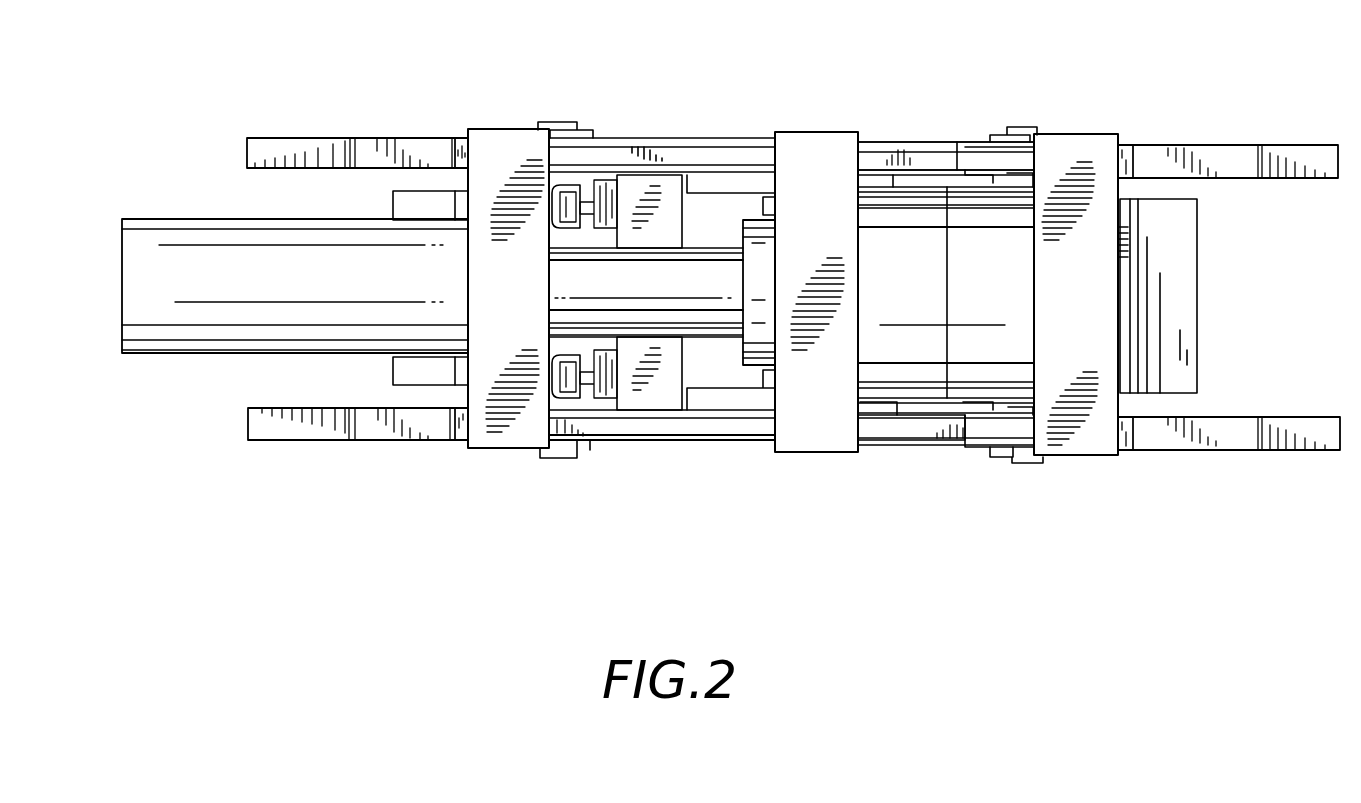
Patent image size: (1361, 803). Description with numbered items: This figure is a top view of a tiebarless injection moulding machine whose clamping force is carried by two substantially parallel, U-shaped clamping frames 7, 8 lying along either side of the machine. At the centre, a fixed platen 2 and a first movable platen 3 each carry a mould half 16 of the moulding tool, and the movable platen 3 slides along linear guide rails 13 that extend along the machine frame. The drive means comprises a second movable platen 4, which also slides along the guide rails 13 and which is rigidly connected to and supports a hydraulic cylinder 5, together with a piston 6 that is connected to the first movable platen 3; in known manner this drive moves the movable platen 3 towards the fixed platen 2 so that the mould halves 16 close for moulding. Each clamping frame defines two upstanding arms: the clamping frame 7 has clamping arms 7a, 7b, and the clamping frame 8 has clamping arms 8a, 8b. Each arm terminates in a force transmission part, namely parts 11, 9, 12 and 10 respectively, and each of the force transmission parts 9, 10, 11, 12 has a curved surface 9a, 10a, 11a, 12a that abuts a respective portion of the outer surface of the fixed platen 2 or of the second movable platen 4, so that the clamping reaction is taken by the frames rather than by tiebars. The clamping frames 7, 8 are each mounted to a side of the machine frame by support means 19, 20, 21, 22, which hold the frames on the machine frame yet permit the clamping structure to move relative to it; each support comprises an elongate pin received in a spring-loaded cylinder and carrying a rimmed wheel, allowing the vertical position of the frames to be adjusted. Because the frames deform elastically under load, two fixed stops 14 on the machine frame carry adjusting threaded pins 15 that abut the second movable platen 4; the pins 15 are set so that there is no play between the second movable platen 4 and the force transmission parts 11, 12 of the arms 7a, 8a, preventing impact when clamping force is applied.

The fixed platen 2 is at (1070, 147).
The movable platen 3 is at (822, 152).
The second movable platen 4 is at (522, 145).
The hydraulic cylinder 5 is at (213, 255).
The piston 6 is at (718, 273).
The clamping frame 7 is at (729, 455).
The clamping arm 7a is at (290, 434).
The clamping arm 7b is at (1300, 440).
The clamping frame 8 is at (396, 140).
The clamping arm 8a is at (328, 143).
The clamping arm 8b is at (1300, 148).
The force transmission part 9 is at (1228, 440).
The curved surface 9a is at (1137, 447).
The force transmission part 10 is at (1238, 148).
The curved surface 10a is at (1133, 158).
The force transmission part 11 is at (367, 430).
The curved surface 11a is at (468, 427).
The force transmission part 12 is at (433, 152).
The curved surface 12a is at (485, 148).
The linear guide rails 13 is at (930, 158).
The fixed stops 14 is at (667, 185).
The adjusting threaded pin 15 is at (578, 185).
The mould halves 16 is at (972, 238).
The support means 19 is at (558, 460).
The support means 20 is at (1027, 468).
The support means 21 is at (566, 124).
The support means 22 is at (1025, 127).